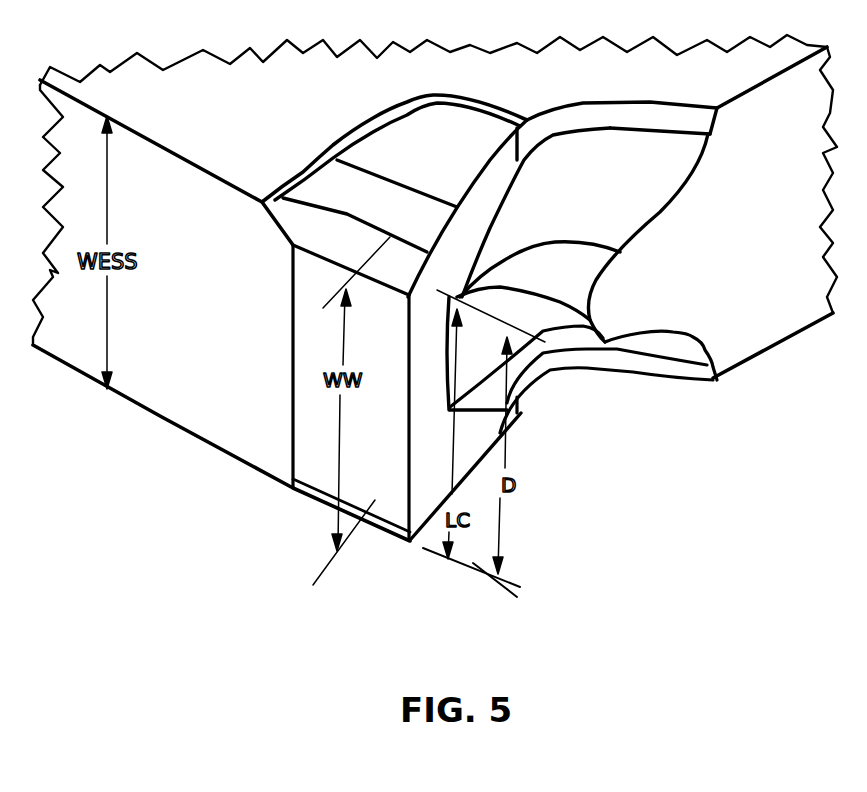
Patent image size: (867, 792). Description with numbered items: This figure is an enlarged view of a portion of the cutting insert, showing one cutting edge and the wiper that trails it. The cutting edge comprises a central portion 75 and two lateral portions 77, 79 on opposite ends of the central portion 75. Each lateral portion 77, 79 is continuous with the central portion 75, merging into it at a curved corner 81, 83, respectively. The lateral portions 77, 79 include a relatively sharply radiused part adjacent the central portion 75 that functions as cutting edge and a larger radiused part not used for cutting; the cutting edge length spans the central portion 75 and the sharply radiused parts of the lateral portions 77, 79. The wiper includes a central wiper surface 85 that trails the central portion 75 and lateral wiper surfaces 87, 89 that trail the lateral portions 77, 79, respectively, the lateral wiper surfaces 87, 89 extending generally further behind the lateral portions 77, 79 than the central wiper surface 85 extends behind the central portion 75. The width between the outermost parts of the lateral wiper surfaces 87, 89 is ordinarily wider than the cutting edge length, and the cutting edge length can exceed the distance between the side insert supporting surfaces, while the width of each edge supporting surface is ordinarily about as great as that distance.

The central portion 75 is at (408, 420).
The lateral portion 77 is at (415, 260).
The lateral portion 79 is at (453, 493).
The curved corner 81 is at (412, 282).
The curved corner 83 is at (415, 540).
The central wiper surface 85 is at (333, 500).
The lateral wiper surface 87 is at (347, 213).
The lateral wiper surface 89 is at (381, 505).